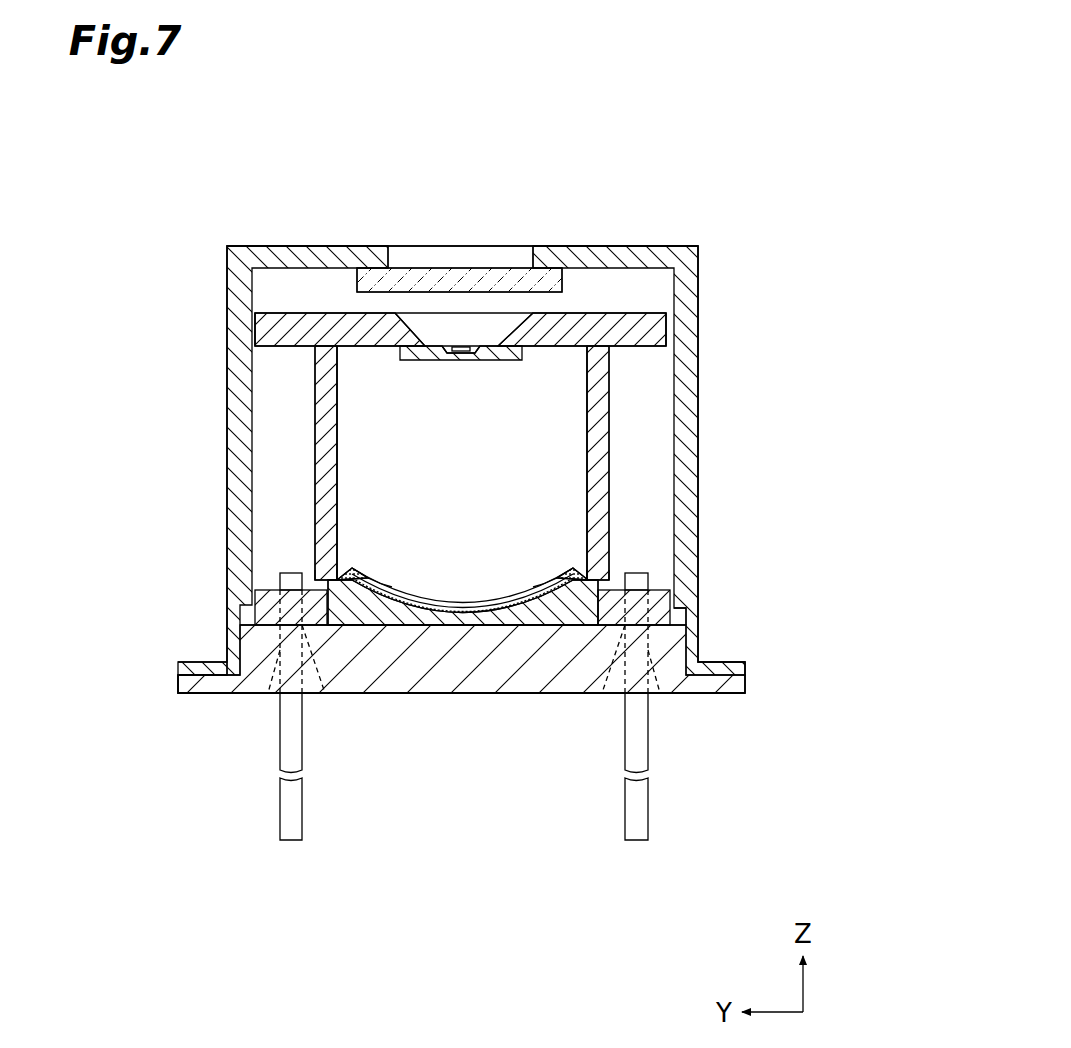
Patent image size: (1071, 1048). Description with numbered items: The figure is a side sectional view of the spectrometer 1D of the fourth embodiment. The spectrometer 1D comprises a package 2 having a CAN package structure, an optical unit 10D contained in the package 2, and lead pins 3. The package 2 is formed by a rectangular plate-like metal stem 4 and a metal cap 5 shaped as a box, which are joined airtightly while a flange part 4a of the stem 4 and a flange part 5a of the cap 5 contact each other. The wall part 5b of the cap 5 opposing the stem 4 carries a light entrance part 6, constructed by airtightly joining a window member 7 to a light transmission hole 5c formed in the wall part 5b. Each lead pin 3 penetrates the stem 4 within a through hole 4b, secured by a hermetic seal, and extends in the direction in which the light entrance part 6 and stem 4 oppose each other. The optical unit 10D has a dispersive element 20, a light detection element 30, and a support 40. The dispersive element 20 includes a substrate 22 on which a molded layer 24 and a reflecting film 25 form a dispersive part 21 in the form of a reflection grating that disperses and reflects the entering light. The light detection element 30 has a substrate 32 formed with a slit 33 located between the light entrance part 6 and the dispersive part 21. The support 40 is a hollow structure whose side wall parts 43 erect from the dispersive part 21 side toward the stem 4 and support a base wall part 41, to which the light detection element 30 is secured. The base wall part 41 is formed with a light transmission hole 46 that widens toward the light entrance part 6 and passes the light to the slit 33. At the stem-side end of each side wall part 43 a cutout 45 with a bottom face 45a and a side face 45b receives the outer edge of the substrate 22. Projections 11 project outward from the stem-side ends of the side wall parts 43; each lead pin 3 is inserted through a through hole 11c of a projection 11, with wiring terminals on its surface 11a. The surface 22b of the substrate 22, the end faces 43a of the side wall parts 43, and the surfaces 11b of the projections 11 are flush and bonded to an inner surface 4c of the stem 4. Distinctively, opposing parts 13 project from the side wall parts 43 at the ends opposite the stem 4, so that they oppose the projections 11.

The spectrometer 1D is at (660, 141).
The package 2 is at (655, 242).
The lead pin 3 is at (292, 834).
The stem 4 is at (527, 682).
The flange part 4a is at (186, 688).
The through hole 4b is at (268, 700).
The inner surface 4c is at (688, 612).
The cap 5 is at (231, 420).
The flange part 5a is at (185, 669).
The wall part 5b is at (311, 247).
The light transmission hole 5c is at (394, 246).
The light entrance part 6 is at (465, 197).
The window member 7 is at (452, 282).
The optical unit 10D is at (612, 393).
The projection 11 is at (270, 603).
The surface 11a is at (279, 583).
The surface 11b is at (268, 632).
The through hole 11c is at (320, 632).
The opposing part 13 is at (265, 328).
The dispersive element 20 is at (491, 632).
The dispersive part 21 is at (463, 600).
The substrate 22 is at (508, 594).
The surface 22b is at (405, 625).
The molded layer 24 is at (438, 628).
The reflecting film 25 is at (423, 594).
The light detection element 30 is at (416, 364).
The substrate 32 is at (507, 358).
The slit 33 is at (461, 354).
The support 40 is at (312, 363).
The base wall part 41 is at (334, 318).
The side wall part 43 is at (326, 462).
The end face 43a is at (342, 680).
The cutout 45 is at (440, 500).
The bottom face 45a is at (353, 571).
The side face 45b is at (395, 578).
The light transmission hole 46 is at (506, 335).